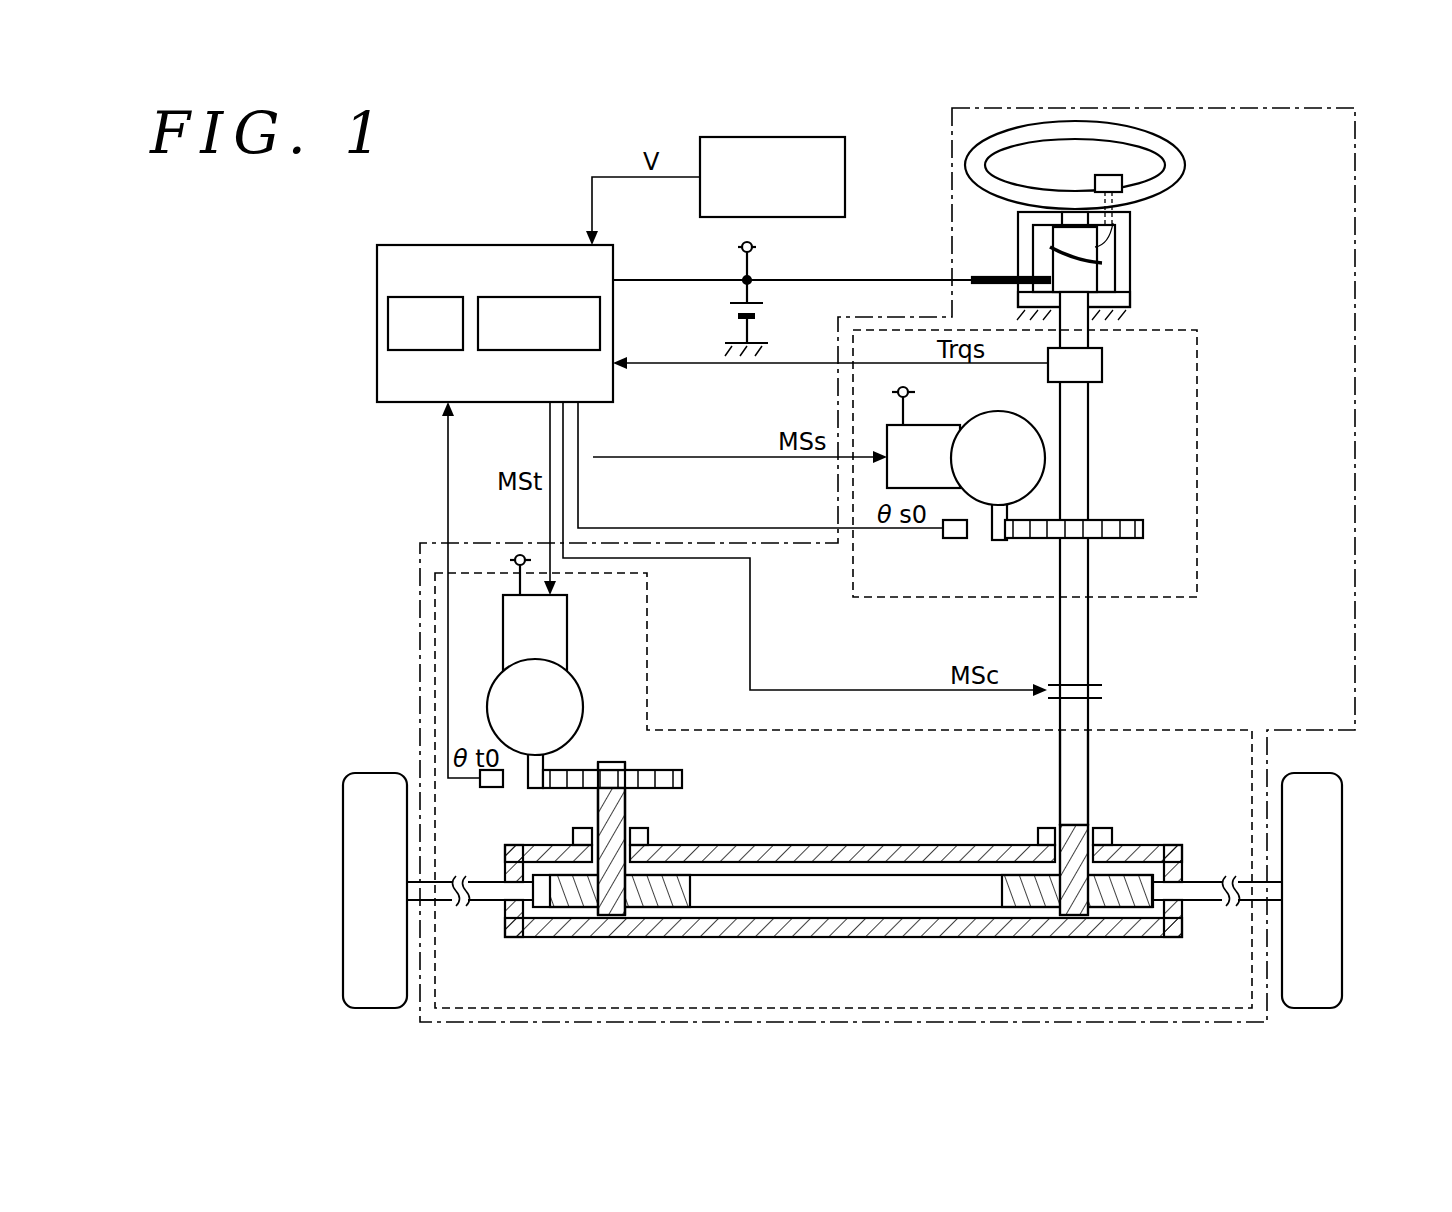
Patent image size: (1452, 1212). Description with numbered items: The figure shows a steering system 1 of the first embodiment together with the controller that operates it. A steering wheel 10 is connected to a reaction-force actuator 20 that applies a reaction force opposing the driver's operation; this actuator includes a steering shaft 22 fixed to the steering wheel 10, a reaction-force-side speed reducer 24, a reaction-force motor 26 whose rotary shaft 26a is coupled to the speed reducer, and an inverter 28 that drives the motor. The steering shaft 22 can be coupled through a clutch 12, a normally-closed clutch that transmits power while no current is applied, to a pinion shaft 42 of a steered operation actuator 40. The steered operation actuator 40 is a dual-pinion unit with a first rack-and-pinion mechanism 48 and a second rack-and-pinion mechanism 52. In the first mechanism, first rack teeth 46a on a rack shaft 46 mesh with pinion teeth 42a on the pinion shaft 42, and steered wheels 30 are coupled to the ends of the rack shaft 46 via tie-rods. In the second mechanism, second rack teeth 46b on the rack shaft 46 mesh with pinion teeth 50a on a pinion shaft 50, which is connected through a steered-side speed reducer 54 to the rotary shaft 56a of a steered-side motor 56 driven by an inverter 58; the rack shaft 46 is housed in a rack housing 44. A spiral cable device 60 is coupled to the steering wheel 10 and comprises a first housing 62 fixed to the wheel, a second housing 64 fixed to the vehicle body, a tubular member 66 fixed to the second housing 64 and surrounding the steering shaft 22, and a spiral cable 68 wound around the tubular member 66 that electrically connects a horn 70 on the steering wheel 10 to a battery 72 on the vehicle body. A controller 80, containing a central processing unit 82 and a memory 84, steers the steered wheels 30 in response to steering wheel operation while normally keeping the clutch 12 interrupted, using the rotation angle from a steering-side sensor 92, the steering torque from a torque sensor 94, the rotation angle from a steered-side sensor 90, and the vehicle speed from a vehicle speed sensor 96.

The steering system 1 is at (1355, 162).
The steering wheel 10 is at (1185, 163).
The clutch 12 is at (1118, 671).
The reaction-force actuator 20 is at (1197, 340).
The steering shaft 22 is at (1088, 433).
The reaction-force-side speed reducer 24 is at (1128, 520).
The reaction-force motor 26 is at (1002, 412).
The rotary shaft 26a is at (998, 542).
The inverter 28 is at (936, 425).
The steered wheels 30 is at (375, 772).
The steered operation actuator 40 is at (1237, 729).
The pinion shaft 42 is at (1088, 775).
The pinion teeth 42a is at (1078, 832).
The rack housing 44 is at (1150, 842).
The rack shaft 46 is at (843, 932).
The first rack teeth 46a is at (1121, 903).
The second rack teeth 46b is at (690, 906).
The first rack-and-pinion mechanism 48 is at (1066, 950).
The pinion shaft 50 is at (599, 805).
The pinion teeth 50a is at (622, 822).
The second rack-and-pinion mechanism 52 is at (843, 921).
The steered-side speed reducer 54 is at (660, 770).
The steered-side motor 56 is at (583, 707).
The rotary shaft 56a is at (535, 790).
The inverter 58 is at (567, 632).
The spiral cable device 60 is at (1155, 266).
The first housing 62 is at (1130, 213).
The second housing 64 is at (1115, 270).
The tubular member 66 is at (1130, 297).
The spiral cable 68 is at (1097, 246).
The horn 70 is at (1100, 174).
The battery 72 is at (763, 305).
The controller 80 is at (528, 323).
The central processing unit 82 is at (405, 297).
The memory 84 is at (495, 297).
The steered-side sensor 90 is at (490, 790).
The steering-side sensor 92 is at (953, 540).
The torque sensor 94 is at (1102, 360).
The vehicle speed sensor 96 is at (845, 177).